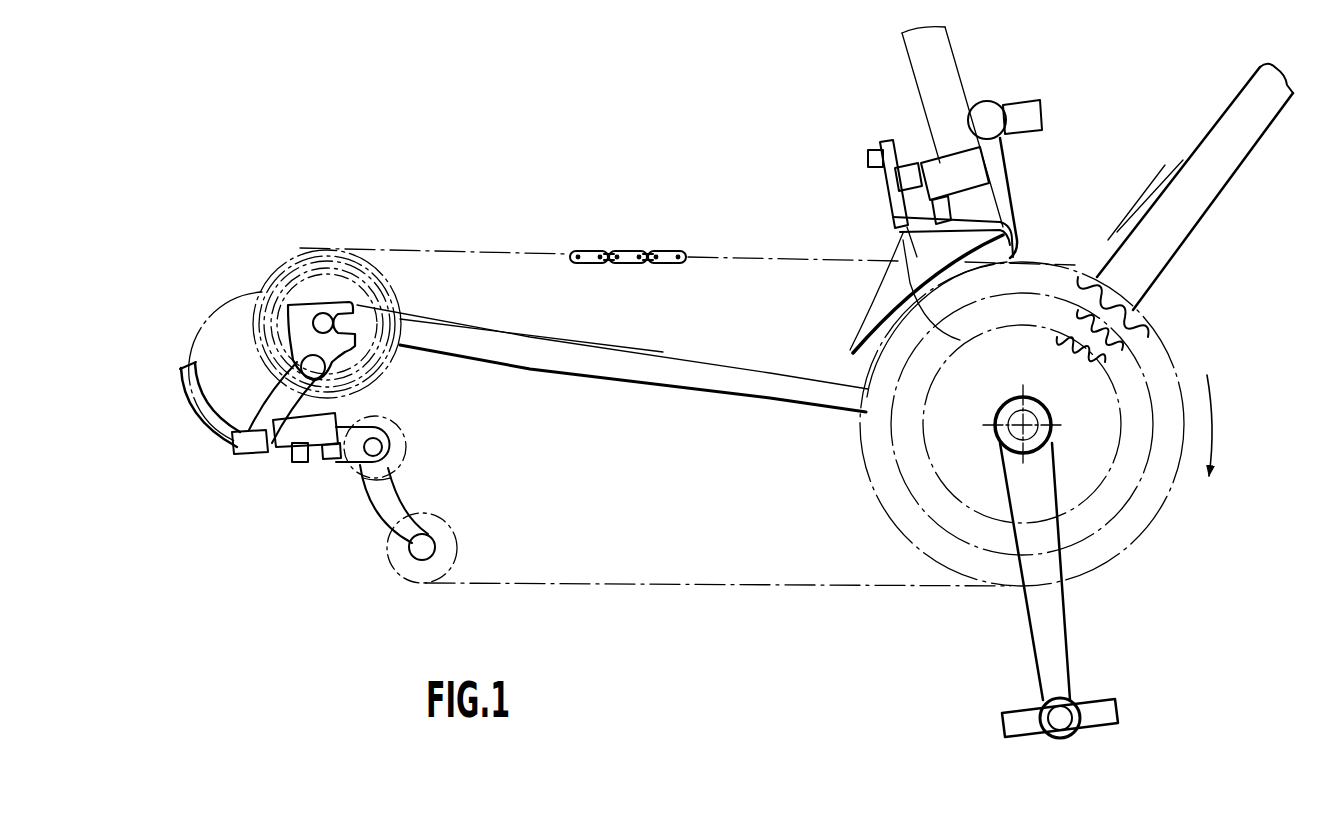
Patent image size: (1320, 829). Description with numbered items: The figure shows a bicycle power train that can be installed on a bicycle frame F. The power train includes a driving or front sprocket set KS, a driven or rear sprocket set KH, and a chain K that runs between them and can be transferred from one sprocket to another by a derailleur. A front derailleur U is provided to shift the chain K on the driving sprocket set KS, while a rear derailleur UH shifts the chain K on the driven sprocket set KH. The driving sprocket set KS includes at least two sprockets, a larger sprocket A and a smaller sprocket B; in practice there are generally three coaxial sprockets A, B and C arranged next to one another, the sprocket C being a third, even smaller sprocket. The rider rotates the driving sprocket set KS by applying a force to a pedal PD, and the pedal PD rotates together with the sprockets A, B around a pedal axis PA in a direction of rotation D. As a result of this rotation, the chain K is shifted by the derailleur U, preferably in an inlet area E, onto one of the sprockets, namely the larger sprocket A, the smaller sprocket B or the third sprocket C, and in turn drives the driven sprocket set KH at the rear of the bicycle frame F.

The driven sprocket set KH is at (255, 298).
The chain K is at (628, 252).
The driving sprocket set KS is at (1010, 597).
The rear derailleur UH is at (369, 533).
The bicycle frame F is at (1248, 100).
The derailleur U is at (893, 222).
The inlet area E is at (876, 269).
The third sprocket C is at (876, 460).
The smaller sprocket B is at (882, 498).
The larger sprocket A is at (890, 522).
The pedal axis PA is at (1040, 446).
The pedal PD is at (1103, 718).
The direction of rotation D is at (1217, 433).